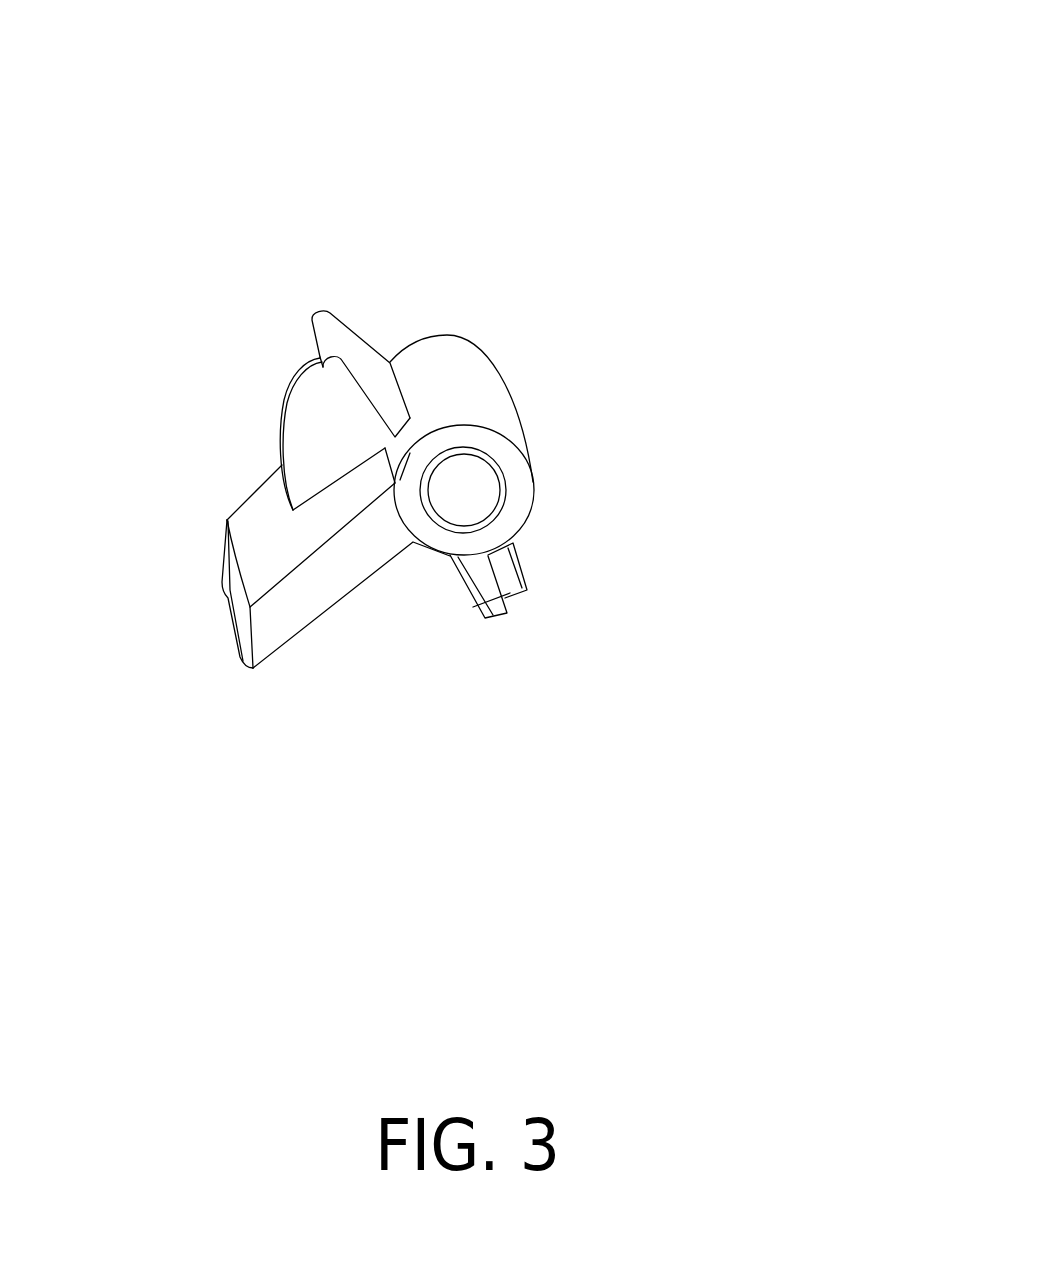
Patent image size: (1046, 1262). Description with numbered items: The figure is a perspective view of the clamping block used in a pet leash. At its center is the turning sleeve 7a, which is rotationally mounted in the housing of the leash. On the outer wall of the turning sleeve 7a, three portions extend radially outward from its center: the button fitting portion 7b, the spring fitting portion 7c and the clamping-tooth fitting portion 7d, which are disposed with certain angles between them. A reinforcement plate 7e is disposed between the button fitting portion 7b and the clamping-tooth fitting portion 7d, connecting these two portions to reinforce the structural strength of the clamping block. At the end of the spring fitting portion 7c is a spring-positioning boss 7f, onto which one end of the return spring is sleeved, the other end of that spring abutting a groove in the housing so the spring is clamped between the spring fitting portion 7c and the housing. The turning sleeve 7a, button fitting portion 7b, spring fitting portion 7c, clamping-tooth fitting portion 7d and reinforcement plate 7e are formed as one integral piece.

The turning sleeve 7a is at (521, 497).
The button fitting portion 7b is at (349, 377).
The spring fitting portion 7c is at (484, 589).
The clamping-tooth fitting portion 7d is at (273, 617).
The reinforcement plate 7e is at (307, 430).
The spring-positioning boss 7f is at (515, 577).